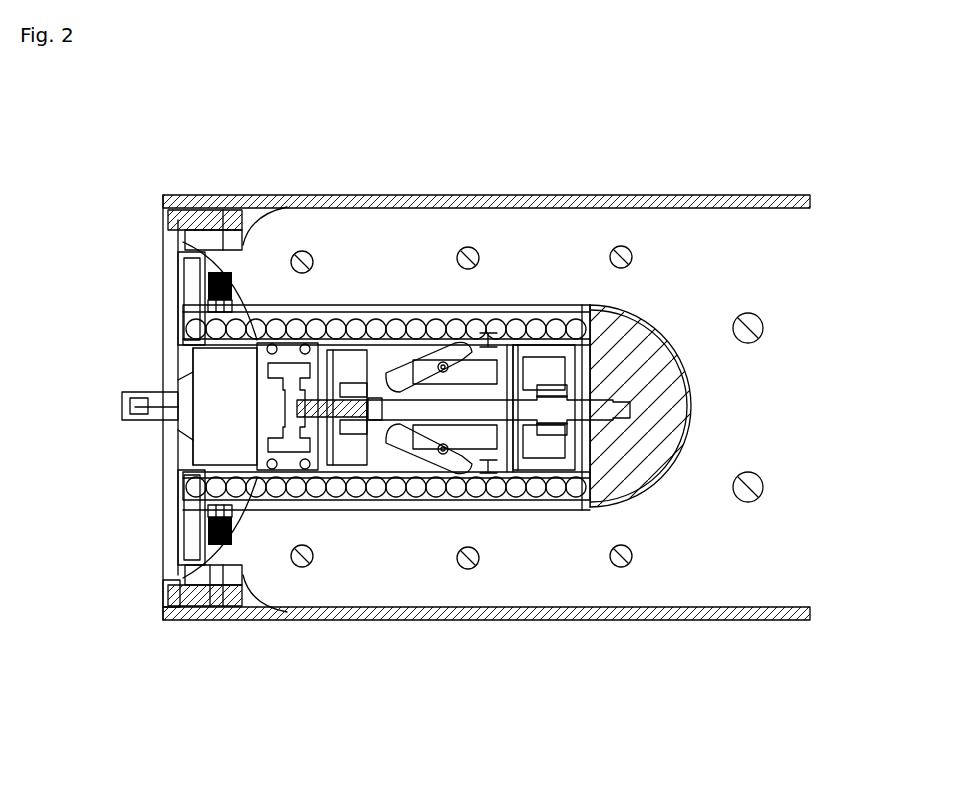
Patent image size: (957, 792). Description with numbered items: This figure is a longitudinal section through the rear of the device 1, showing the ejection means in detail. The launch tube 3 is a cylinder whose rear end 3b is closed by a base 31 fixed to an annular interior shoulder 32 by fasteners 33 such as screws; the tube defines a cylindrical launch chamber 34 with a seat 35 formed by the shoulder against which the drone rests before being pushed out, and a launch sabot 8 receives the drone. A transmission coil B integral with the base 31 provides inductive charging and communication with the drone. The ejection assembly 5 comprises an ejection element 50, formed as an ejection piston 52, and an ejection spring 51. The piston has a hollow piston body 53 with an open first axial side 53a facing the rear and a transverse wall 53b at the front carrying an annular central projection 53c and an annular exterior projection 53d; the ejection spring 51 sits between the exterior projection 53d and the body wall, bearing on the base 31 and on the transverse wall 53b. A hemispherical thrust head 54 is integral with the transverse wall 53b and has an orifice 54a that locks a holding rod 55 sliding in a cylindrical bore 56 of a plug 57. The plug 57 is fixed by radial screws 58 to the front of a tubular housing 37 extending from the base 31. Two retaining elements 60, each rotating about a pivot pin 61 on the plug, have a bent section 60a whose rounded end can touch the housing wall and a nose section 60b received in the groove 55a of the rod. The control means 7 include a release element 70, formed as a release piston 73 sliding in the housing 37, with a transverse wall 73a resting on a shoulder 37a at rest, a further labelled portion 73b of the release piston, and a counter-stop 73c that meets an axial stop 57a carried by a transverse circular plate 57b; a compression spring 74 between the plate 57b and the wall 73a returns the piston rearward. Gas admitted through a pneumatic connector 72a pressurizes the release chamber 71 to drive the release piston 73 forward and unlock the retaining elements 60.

The device 1 is at (646, 147).
The launch tube 3 is at (790, 190).
The rear end 3b is at (210, 212).
The ejection assembly 5 is at (670, 337).
The control means 7 is at (250, 417).
The launch sabot 8 is at (755, 547).
The base 31 is at (172, 282).
The interior shoulder 32 is at (193, 593).
The fasteners 33 is at (210, 606).
The launch chamber 34 is at (268, 578).
The seat 35 is at (266, 235).
The housing 37 is at (215, 352).
The shoulder 37a is at (168, 212).
The ejection element 50 is at (439, 518).
The ejection spring 51 is at (336, 305).
The ejection piston 52 is at (548, 514).
The piston body 53 is at (494, 435).
The first axial side 53a is at (183, 300).
The transverse wall 53b is at (578, 510).
The central projection 53c is at (592, 605).
The exterior projection 53d is at (556, 345).
The thrust head 54 is at (647, 440).
The orifice 54a is at (632, 409).
The holding rod 55 is at (519, 340).
The groove 55a is at (400, 470).
The cylindrical bore 56 is at (472, 385).
The plug 57 is at (536, 435).
The axial stop 57a is at (318, 472).
The transverse circular plate 57b is at (357, 478).
The radial screws 58 is at (503, 343).
The retaining element 60 is at (432, 358).
The bent section 60a is at (420, 360).
The nose section 60b is at (390, 363).
The pivot pin 61 is at (457, 445).
The release element 70 is at (285, 442).
The release chamber 71 is at (192, 338).
The pneumatic connector 72a is at (122, 407).
The release piston 73 is at (305, 458).
The transverse wall 73a is at (212, 527).
The clip 73b is at (478, 333).
The counter-stop 73c is at (187, 425).
The compression spring 74 is at (320, 345).
The transmission coil B is at (163, 605).